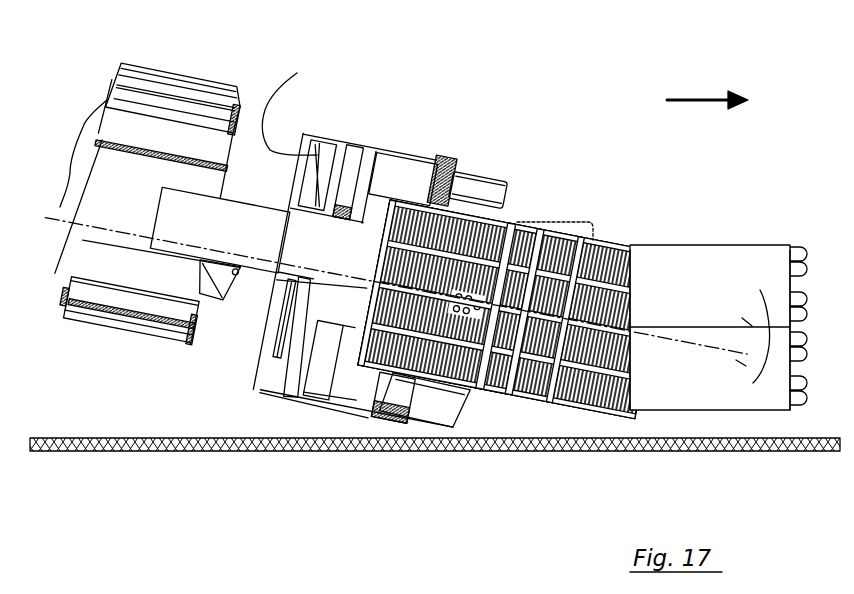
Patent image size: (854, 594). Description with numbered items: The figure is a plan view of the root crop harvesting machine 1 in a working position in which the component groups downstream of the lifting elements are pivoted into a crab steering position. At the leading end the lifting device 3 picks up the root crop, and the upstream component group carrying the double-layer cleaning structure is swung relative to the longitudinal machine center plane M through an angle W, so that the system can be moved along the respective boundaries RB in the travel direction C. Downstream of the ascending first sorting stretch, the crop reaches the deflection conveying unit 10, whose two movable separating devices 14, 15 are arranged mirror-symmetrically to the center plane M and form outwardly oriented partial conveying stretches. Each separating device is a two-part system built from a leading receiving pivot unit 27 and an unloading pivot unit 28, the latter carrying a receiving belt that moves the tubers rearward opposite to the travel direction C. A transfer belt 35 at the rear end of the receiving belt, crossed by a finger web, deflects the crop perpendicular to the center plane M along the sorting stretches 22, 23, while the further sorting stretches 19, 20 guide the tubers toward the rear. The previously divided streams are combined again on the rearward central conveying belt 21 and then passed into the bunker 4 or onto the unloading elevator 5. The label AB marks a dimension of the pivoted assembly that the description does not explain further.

The root crop harvesting machine 1 is at (568, 78).
The lifting device 3 is at (785, 240).
The bunker 4 is at (150, 190).
The unloading elevator 5 is at (118, 320).
The deflection conveying unit 10 is at (527, 97).
The separating device 14 is at (518, 151).
The separating device 15 is at (474, 416).
The sorting stretch 19 is at (403, 179).
The sorting stretch 20 is at (348, 365).
The central conveying belt 21 is at (248, 222).
The sorting stretch 22 is at (333, 238).
The sorting stretch 23 is at (307, 385).
The receiving pivot unit 27 is at (497, 140).
The unloading pivot unit 28 is at (305, 124).
The transfer belt 35 is at (800, 203).
The working width AB is at (295, 101).
The travel direction C is at (693, 100).
The longitudinal machine center plane M is at (123, 232).
The boundaries RB is at (210, 447).
The angle W is at (758, 292).